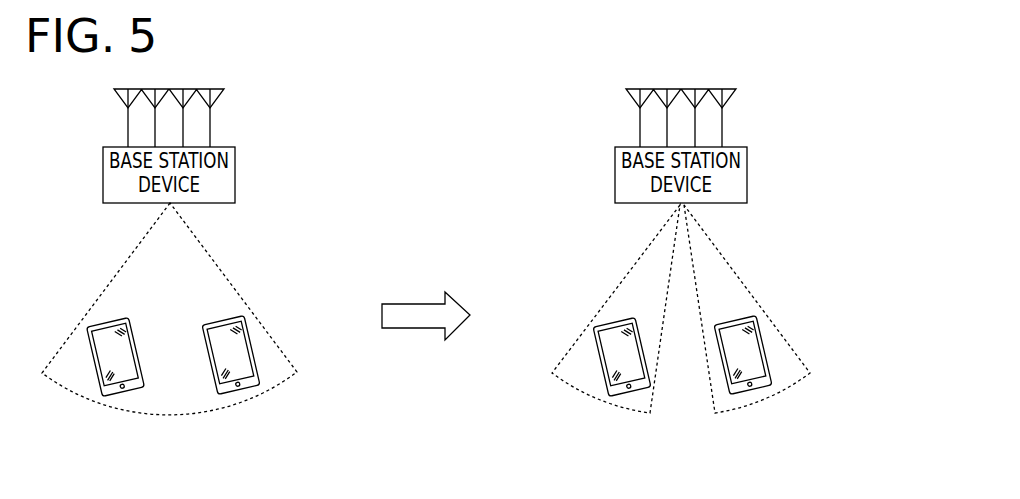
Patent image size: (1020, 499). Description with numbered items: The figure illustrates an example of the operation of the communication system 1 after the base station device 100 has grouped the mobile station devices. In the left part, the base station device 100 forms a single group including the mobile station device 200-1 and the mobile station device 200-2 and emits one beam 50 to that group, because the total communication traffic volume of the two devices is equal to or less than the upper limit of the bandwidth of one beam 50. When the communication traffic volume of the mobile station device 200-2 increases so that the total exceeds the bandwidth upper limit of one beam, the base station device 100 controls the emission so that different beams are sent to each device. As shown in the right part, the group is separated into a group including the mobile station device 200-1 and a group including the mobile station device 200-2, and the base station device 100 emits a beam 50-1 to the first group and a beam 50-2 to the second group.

The communication system 1 is at (415, 137).
The base station device 100 is at (235, 176).
The beam 50 is at (230, 278).
The beam 50-1 is at (620, 282).
The beam 50-2 is at (740, 278).
The mobile station device 200-1 is at (125, 396).
The mobile station device 200-2 is at (236, 394).